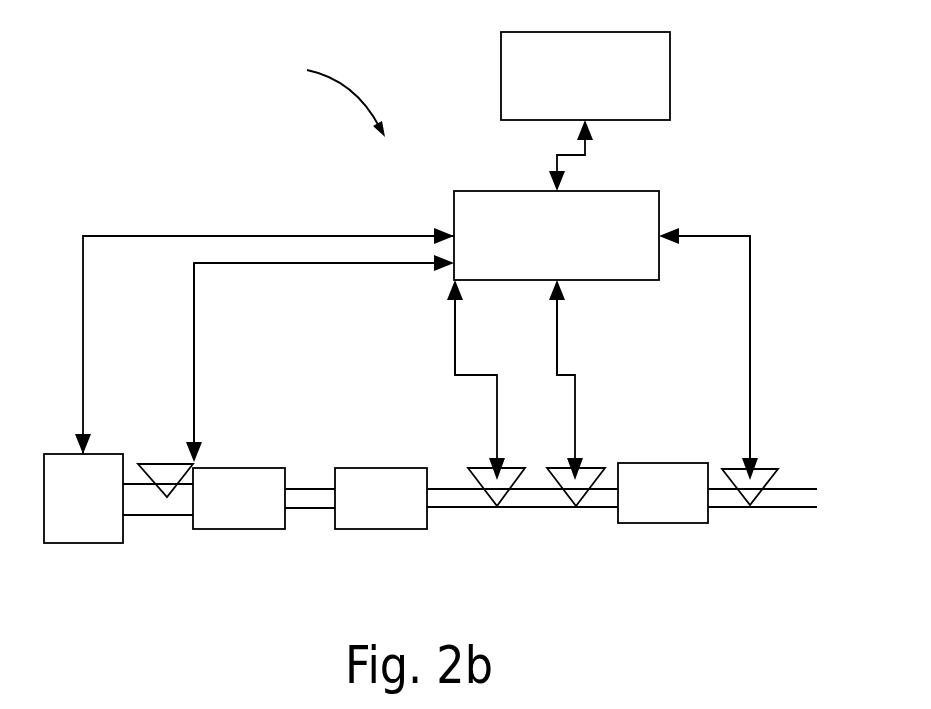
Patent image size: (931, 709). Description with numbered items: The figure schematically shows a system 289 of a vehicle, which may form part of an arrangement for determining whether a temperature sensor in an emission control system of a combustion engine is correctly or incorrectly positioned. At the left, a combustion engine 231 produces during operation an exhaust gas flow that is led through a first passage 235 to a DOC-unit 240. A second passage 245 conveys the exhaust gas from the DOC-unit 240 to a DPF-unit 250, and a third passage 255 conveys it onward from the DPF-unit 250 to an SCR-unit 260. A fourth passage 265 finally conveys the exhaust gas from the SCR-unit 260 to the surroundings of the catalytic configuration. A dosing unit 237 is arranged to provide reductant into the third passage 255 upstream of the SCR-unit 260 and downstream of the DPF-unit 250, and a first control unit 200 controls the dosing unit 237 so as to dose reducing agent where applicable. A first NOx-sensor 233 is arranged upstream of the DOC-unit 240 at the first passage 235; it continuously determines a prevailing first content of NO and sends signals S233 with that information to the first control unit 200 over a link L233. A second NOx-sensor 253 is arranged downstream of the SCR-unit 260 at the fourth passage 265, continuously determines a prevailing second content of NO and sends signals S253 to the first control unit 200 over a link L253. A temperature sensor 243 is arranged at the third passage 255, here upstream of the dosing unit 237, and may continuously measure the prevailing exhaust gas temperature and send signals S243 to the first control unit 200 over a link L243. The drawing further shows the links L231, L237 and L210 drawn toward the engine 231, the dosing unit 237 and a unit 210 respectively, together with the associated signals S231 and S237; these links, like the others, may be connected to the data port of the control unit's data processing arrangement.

The controller / computer 210 is at (585, 76).
The first control unit 200 is at (556, 235).
The combustion engine 231 is at (83, 498).
The DOC-unit 240 is at (239, 498).
The DPF-unit 250 is at (381, 498).
The SCR-unit 260 is at (663, 493).
The first NOx-sensor 233 is at (139, 464).
The first passage 235 is at (148, 517).
The temperature sensor 243 is at (469, 468).
The second passage 245 is at (305, 510).
The dosing unit 237 is at (602, 468).
The second NOx-sensor 253 is at (776, 471).
The third passage 255 is at (485, 508).
The fourth passage 265 is at (728, 508).
The system 289 is at (317, 98).
The control signal to source S231 is at (264, 329).
The link L231 is at (250, 235).
The signals S233 is at (320, 358).
The link L233 is at (194, 333).
The signals S243 is at (444, 380).
The link L243 is at (455, 333).
The sensor signal from valve 237 S237 is at (596, 380).
The link L237 is at (558, 335).
The signals S253 is at (741, 354).
The link L253 is at (750, 313).
The link L210 is at (587, 163).